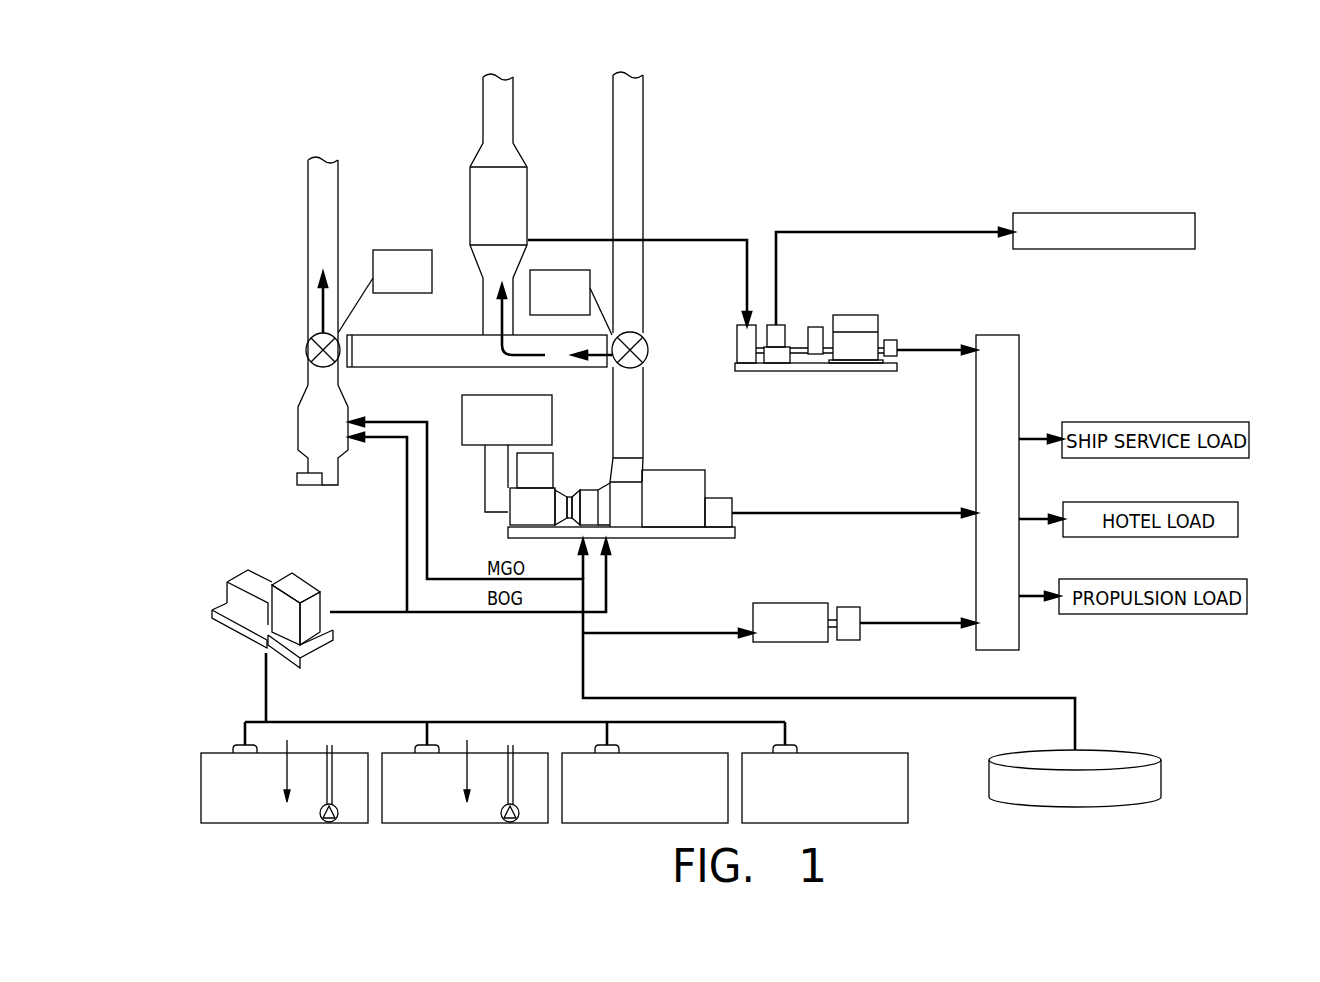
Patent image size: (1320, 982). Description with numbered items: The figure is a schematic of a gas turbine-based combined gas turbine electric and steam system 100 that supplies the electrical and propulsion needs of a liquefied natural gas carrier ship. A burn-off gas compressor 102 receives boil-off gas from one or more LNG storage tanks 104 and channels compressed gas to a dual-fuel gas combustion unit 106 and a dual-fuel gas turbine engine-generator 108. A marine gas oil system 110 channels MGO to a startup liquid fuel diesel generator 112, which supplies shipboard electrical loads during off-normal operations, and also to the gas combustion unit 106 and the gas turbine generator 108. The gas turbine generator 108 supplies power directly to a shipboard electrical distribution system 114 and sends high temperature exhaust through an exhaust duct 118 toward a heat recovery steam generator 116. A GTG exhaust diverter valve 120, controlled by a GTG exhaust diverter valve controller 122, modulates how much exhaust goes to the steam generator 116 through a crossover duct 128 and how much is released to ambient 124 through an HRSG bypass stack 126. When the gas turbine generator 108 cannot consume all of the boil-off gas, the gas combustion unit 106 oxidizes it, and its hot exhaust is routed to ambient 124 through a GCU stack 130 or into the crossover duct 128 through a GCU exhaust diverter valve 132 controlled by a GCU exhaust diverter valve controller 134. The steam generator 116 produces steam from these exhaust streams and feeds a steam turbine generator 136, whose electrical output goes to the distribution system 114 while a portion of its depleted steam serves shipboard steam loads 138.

The combined gas turbine electric and steam system 100 is at (837, 130).
The burn-off gas compressor 102 is at (283, 582).
The LNG storage tanks 104 is at (260, 834).
The dual-fuel gas combustion unit 106 is at (349, 393).
The dual-fuel gas turbine engine-generator 108 is at (706, 478).
The marine gas oil system 110 is at (1162, 778).
The startup liquid fuel diesel generator 112 is at (812, 602).
The shipboard electrical distribution system 114 is at (991, 334).
The heat recovery steam generator 116 is at (510, 160).
The exhaust duct 118 is at (643, 432).
The GTG exhaust diverter valve 120 is at (650, 338).
The GTG exhaust diverter valve controller 122 is at (581, 303).
The ambient 124 is at (593, 86).
The HRSG bypass stack 126 is at (643, 131).
The crossover duct 128 is at (475, 335).
The GCU stack 130 is at (308, 190).
The GCU exhaust diverter valve 132 is at (306, 340).
The GCU exhaust diverter valve controller 134 is at (390, 250).
The steam turbine generator 136 is at (848, 372).
The shipboard steam loads 138 is at (1113, 212).